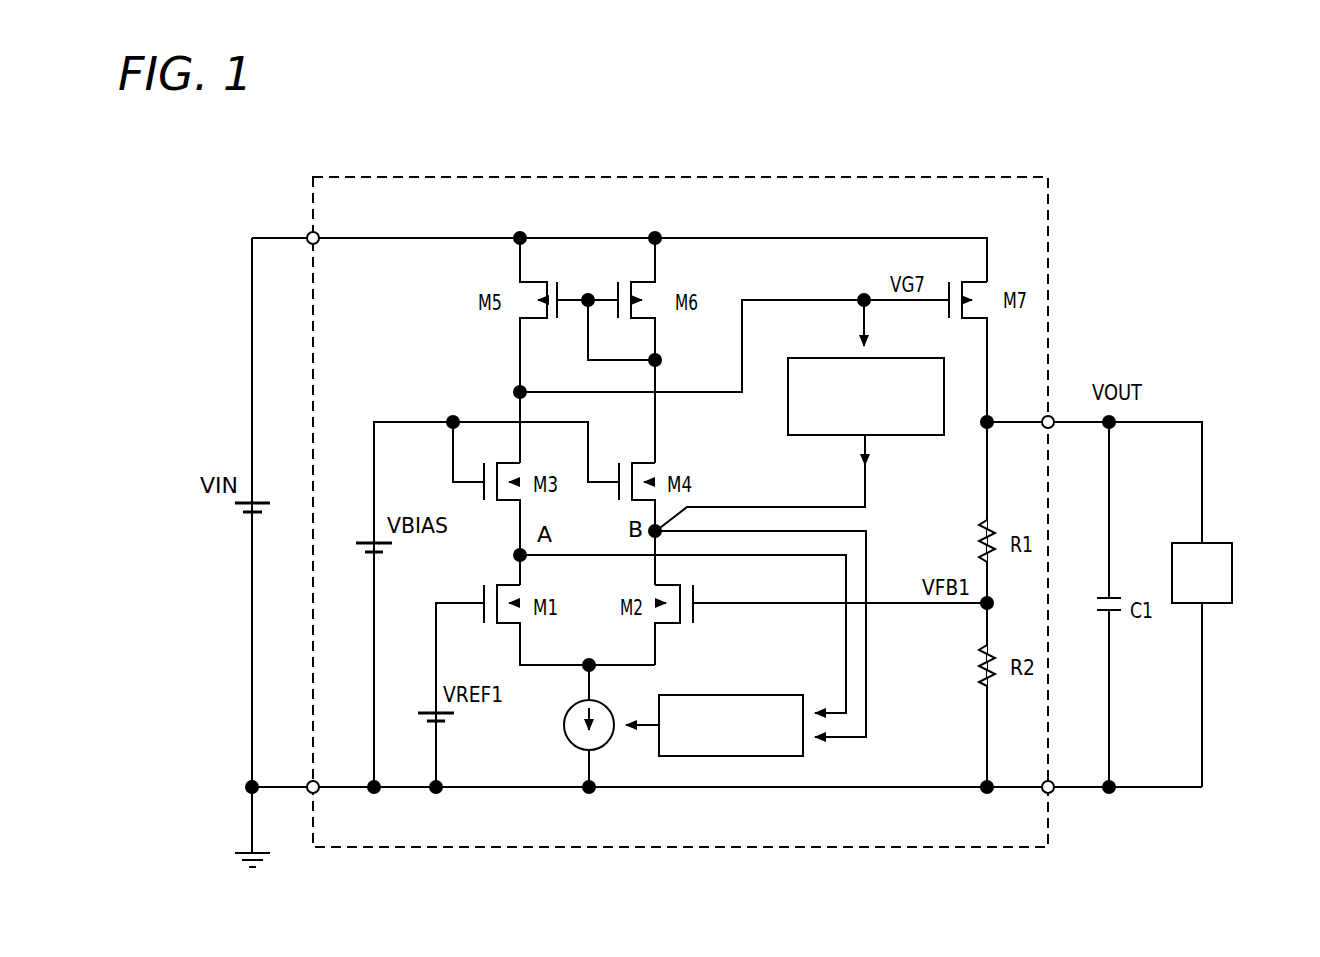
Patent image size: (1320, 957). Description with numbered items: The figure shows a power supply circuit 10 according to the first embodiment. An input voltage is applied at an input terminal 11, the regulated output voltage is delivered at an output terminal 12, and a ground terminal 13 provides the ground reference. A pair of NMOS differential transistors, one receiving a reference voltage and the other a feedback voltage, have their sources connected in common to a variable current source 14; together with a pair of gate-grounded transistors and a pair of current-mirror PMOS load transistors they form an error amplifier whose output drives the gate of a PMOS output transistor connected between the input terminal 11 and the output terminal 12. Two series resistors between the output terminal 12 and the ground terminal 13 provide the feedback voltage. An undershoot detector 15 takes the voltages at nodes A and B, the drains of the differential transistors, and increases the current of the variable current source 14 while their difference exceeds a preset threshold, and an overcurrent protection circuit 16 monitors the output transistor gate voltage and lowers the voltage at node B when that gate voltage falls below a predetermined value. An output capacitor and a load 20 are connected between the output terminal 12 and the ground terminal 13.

The power supply circuit 10 is at (740, 177).
The input terminal 11 is at (306, 238).
The output terminal 12 is at (1054, 424).
The ground terminal 13 is at (310, 792).
The variable current source 14 is at (606, 746).
The undershoot detector 15 is at (712, 695).
The overcurrent protection circuit 16 is at (828, 437).
The load 20 is at (1232, 577).